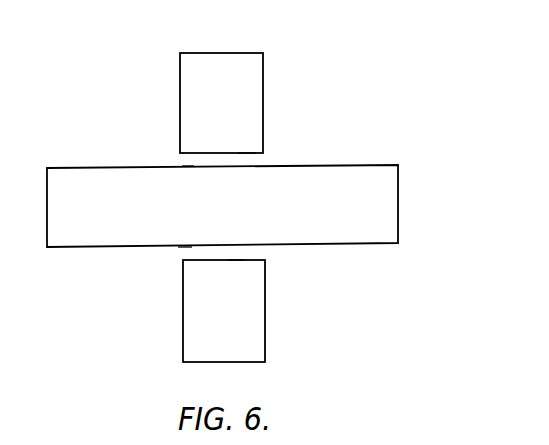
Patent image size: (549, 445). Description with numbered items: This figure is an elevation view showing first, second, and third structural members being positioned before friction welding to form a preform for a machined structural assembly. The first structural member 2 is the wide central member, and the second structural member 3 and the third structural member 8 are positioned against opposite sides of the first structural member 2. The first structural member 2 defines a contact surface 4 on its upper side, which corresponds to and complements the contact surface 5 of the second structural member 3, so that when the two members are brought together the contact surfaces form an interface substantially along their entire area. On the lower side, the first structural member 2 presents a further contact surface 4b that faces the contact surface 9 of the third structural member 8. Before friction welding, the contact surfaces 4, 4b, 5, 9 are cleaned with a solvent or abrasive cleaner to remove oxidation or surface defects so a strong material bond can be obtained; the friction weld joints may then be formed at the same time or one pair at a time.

The first structural member 2 is at (263, 90).
The second structural member 3 is at (103, 167).
The contact surface 4 is at (190, 167).
The contact surface 5 is at (240, 150).
The third structural member 8 is at (265, 333).
The contact surface 9 is at (233, 258).
The contact region 4b is at (185, 248).